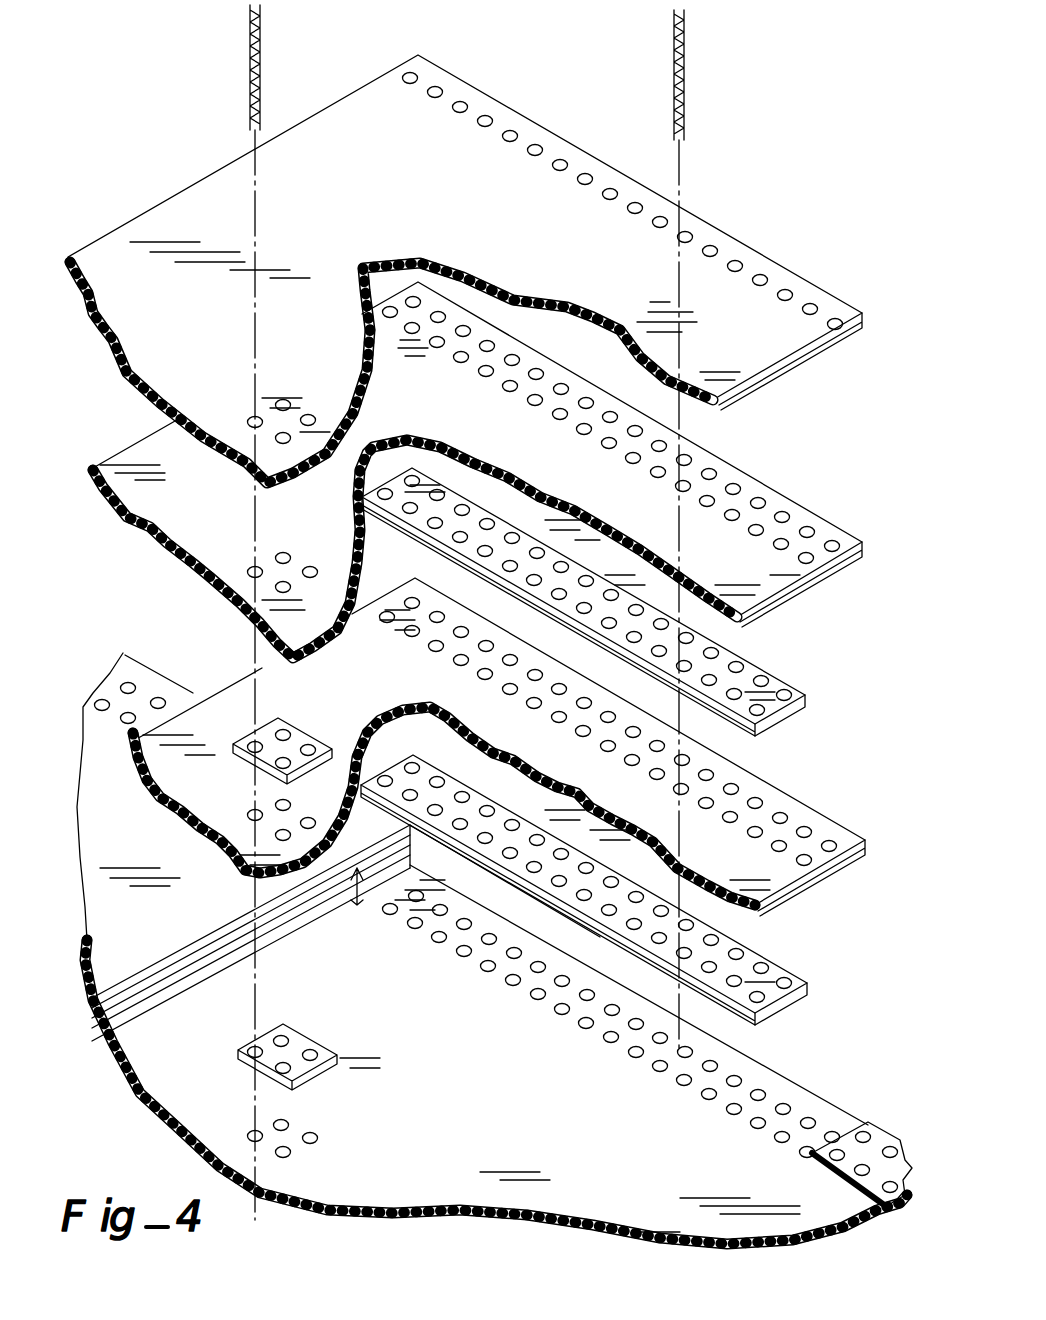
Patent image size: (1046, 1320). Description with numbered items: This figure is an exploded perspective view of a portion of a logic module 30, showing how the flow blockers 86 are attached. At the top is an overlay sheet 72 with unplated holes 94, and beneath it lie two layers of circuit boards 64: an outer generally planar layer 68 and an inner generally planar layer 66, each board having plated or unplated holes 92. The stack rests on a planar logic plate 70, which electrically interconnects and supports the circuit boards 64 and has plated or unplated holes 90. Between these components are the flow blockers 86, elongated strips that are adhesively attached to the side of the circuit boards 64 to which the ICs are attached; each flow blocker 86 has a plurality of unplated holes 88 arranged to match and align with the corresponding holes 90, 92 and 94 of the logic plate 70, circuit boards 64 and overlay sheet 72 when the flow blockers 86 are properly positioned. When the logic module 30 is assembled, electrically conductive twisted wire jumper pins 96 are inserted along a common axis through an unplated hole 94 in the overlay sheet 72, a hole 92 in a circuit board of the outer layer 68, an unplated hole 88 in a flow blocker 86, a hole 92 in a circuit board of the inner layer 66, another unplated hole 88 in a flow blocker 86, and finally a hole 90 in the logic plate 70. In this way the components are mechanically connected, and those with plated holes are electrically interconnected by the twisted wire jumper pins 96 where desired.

The logic module 30 is at (164, 138).
The circuit board 64 is at (617, 775).
The inner generally planar layer 66 is at (840, 880).
The outer generally planar layer 68 is at (485, 551).
The logic plate 70 is at (494, 948).
The overlay sheet 72 is at (465, 247).
The flow blocker 86 is at (782, 728).
The unplated holes 88 is at (676, 667).
The holes 90 is at (633, 1049).
The holes 92 is at (708, 470).
The holes 94 is at (580, 178).
The twisted wire jumper pin 96 is at (684, 73).